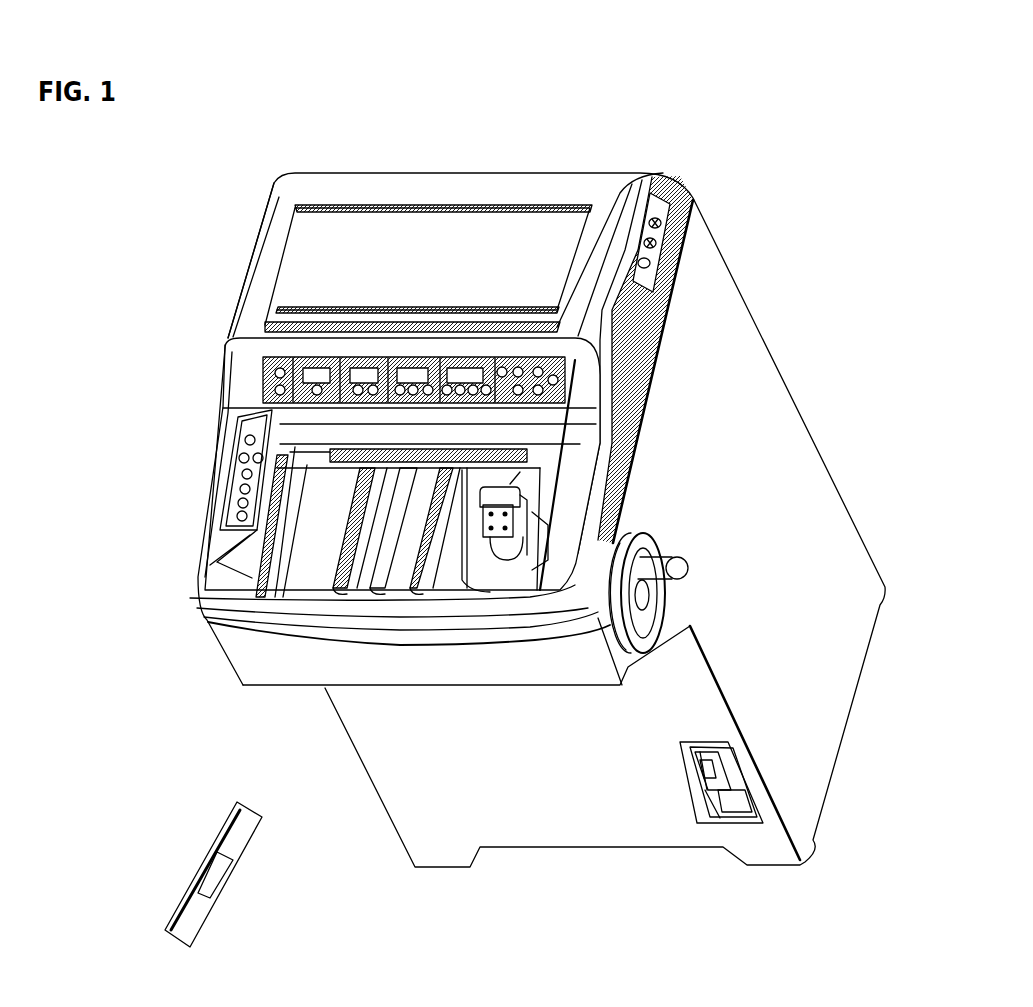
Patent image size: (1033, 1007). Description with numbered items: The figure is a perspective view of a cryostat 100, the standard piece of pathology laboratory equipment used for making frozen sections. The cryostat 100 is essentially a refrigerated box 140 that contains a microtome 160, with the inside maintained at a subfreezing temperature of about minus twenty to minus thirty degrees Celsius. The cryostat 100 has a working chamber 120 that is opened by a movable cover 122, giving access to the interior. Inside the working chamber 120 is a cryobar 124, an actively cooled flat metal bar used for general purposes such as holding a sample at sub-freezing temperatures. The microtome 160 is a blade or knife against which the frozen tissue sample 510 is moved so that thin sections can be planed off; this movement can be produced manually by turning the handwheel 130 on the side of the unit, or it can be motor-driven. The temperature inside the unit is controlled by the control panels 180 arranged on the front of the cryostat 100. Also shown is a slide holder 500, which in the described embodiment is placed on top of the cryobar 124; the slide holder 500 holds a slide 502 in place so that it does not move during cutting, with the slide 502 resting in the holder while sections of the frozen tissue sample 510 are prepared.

The cryostat 100 is at (752, 213).
The working chamber 120 is at (308, 585).
The movable cover 122 is at (524, 455).
The cryobar 124 is at (390, 580).
The handwheel 130 is at (688, 561).
The refrigerated box 140 is at (617, 176).
The microtome 160 is at (533, 510).
The control panels 180 is at (263, 528).
The slide holder 500 is at (197, 915).
The slide 502 is at (220, 865).
The frozen tissue sample 510 is at (500, 575).